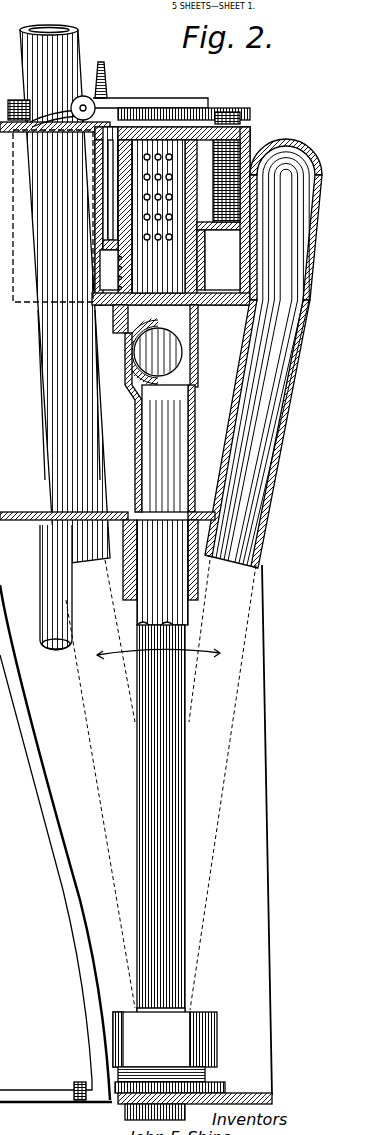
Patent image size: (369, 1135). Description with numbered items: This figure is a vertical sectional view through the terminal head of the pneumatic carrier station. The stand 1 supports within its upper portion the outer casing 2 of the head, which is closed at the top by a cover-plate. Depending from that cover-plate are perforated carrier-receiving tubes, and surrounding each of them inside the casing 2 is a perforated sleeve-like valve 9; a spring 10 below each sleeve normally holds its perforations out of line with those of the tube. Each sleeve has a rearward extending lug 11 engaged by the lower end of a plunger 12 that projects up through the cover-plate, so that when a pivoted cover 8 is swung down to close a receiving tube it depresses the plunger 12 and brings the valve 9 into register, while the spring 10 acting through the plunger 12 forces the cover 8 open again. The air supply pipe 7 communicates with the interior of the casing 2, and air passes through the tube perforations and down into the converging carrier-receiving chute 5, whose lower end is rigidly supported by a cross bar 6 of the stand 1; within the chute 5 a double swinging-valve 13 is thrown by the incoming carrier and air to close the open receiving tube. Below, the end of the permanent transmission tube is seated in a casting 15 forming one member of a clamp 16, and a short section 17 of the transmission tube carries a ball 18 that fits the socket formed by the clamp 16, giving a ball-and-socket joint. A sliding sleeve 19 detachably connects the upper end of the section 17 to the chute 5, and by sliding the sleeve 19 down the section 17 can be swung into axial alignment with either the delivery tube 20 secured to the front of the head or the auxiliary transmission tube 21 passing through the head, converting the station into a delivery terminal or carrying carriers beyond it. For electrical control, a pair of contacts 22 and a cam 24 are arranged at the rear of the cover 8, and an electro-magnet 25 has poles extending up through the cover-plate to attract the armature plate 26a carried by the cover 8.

The stand 1 is at (6, 392).
The outer casing 2 is at (207, 265).
The carrier-receiving chute 5 is at (182, 360).
The cross bar 6 is at (16, 506).
The air supply pipe 7 is at (56, 585).
The pivoted cover 8 is at (216, 110).
The sleeve-like valve 9 is at (197, 226).
The spring 10 is at (111, 270).
The lug 11 is at (104, 254).
The plunger 12 is at (110, 230).
The double swinging-valve 13 is at (186, 402).
The casting 15 is at (119, 1113).
The clamp 16 is at (169, 1052).
The short section of transmission tube 17 is at (196, 864).
The ball 18 is at (197, 1010).
The sliding sleeve 19 is at (204, 600).
The delivery tube 20 is at (255, 479).
The auxiliary transmission tube 21 is at (68, 62).
The pair of contacts 22 is at (48, 25).
The cam 24 is at (62, 152).
The electro-magnet 25 is at (262, 150).
The armature plate 26a is at (240, 118).